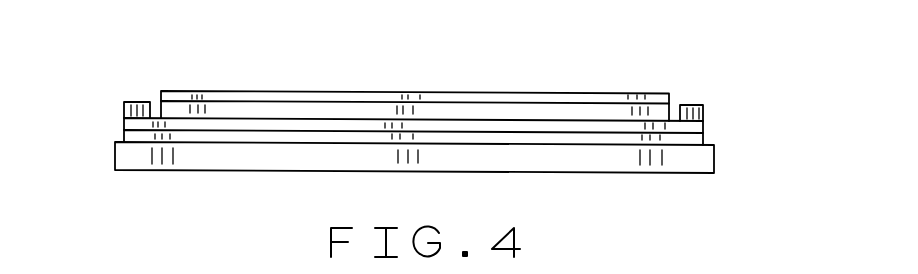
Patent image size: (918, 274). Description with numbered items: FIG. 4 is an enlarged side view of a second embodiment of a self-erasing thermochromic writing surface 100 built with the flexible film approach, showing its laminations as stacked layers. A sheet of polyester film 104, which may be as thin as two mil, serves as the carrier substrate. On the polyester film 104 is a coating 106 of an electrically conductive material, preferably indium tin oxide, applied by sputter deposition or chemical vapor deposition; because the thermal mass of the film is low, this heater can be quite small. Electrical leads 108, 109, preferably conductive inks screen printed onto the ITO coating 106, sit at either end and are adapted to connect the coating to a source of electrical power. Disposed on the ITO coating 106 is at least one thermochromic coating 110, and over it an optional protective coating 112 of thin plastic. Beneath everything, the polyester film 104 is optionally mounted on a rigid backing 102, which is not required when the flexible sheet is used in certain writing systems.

The writing surface 100 is at (629, 63).
The rigid backing 102 is at (127, 157).
The polyester film 104 is at (138, 136).
The ITO coating 106 is at (692, 126).
The electrical lead 108 is at (135, 109).
The electrical lead 109 is at (687, 103).
The thermochromic coating 110 is at (180, 109).
The protective coating 112 is at (418, 97).